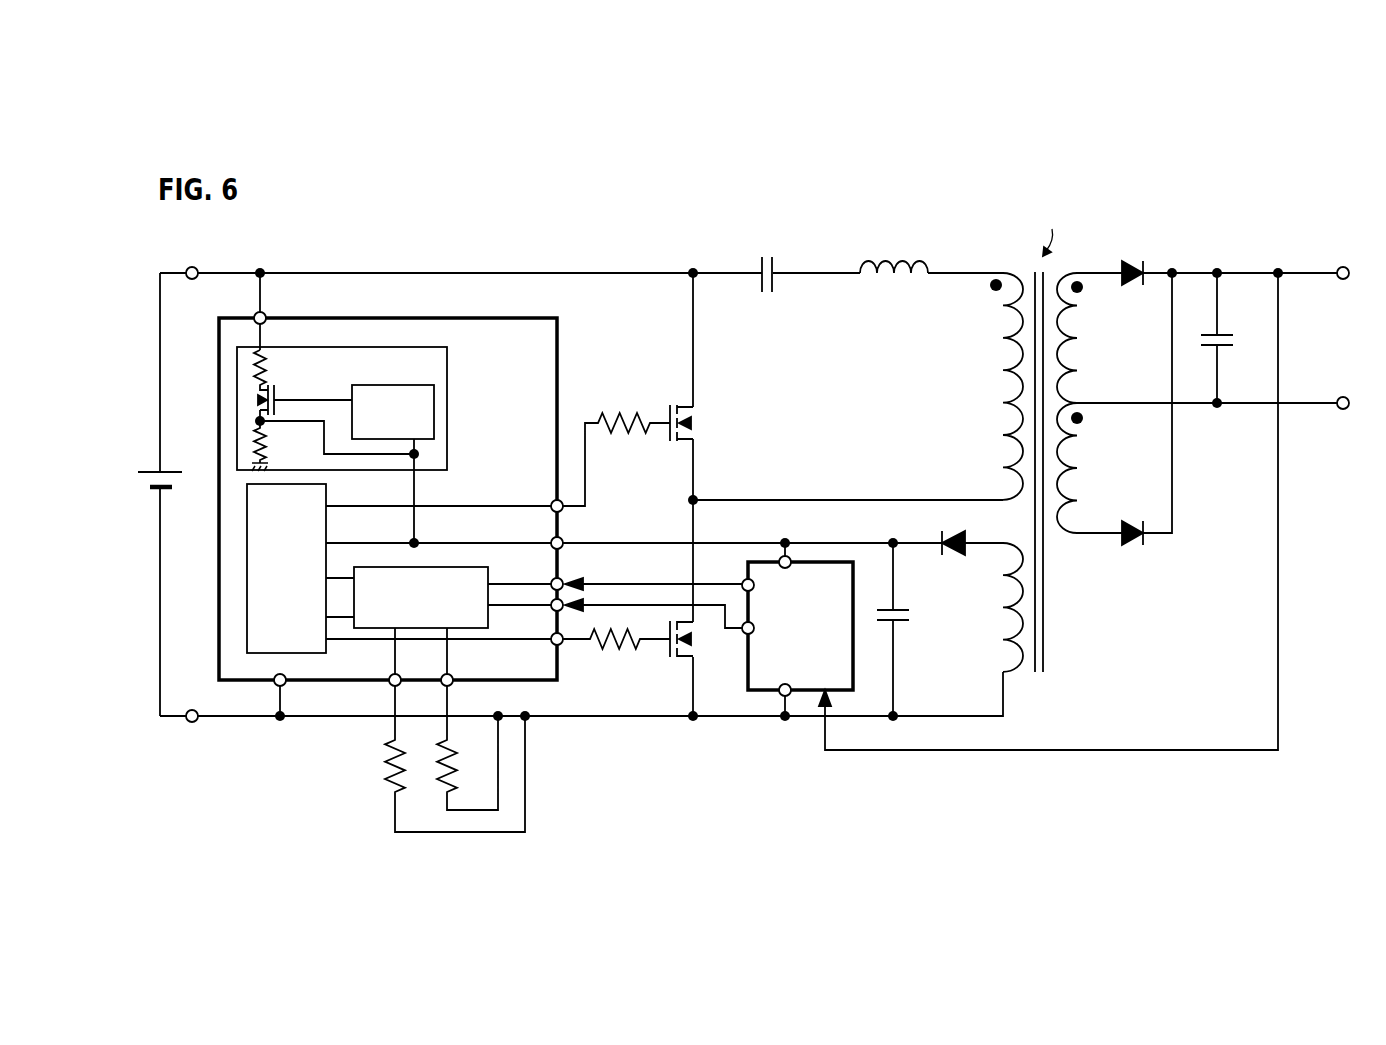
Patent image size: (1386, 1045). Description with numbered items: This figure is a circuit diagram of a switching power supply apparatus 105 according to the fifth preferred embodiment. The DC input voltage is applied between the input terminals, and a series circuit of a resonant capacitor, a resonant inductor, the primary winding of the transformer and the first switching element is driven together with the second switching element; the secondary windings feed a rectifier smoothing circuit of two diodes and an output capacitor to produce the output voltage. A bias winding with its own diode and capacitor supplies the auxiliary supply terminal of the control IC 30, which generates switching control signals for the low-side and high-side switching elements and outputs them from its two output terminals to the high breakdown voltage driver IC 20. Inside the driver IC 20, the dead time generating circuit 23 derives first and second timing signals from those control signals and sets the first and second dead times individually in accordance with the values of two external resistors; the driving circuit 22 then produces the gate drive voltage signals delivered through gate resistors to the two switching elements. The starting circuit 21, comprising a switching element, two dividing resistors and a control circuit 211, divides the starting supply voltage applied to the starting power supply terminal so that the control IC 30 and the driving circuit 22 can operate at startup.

The switching power supply apparatus 105 is at (1323, 175).
The high breakdown voltage driver IC 20 is at (555, 317).
The starting circuit 21 is at (448, 347).
The control circuit 211 is at (434, 411).
The driving circuit 22 is at (326, 489).
The dead time generating circuit 23 is at (434, 566).
The control IC 30 is at (827, 534).